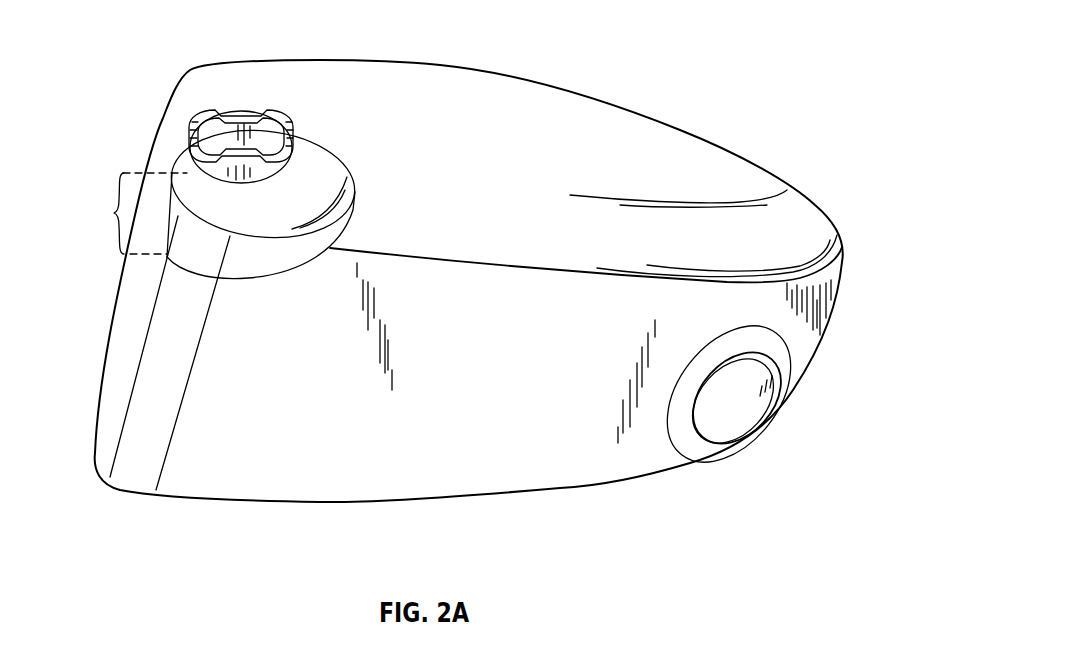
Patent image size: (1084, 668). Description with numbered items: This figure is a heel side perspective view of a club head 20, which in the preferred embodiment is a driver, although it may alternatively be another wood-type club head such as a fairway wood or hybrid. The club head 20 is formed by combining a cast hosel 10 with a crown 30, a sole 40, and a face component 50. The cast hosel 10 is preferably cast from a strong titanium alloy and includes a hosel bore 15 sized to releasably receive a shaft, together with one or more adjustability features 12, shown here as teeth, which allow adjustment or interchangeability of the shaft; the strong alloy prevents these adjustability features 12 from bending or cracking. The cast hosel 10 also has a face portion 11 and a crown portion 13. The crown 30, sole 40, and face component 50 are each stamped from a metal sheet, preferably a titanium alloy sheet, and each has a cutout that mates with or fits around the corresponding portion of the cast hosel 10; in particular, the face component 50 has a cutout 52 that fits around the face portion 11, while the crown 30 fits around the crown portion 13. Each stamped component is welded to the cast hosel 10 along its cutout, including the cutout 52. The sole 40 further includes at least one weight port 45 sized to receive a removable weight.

The cast hosel 10 is at (191, 153).
The face portion 11 is at (167, 228).
The adjustability features 12 is at (275, 110).
The crown portion 13 is at (315, 180).
The hosel bore 15 is at (208, 112).
The club head 20 is at (737, 53).
The crown 30 is at (459, 89).
The sole 40 is at (643, 465).
The weight port 45 is at (742, 414).
The face component 50 is at (114, 426).
The cutout 52 is at (114, 213).